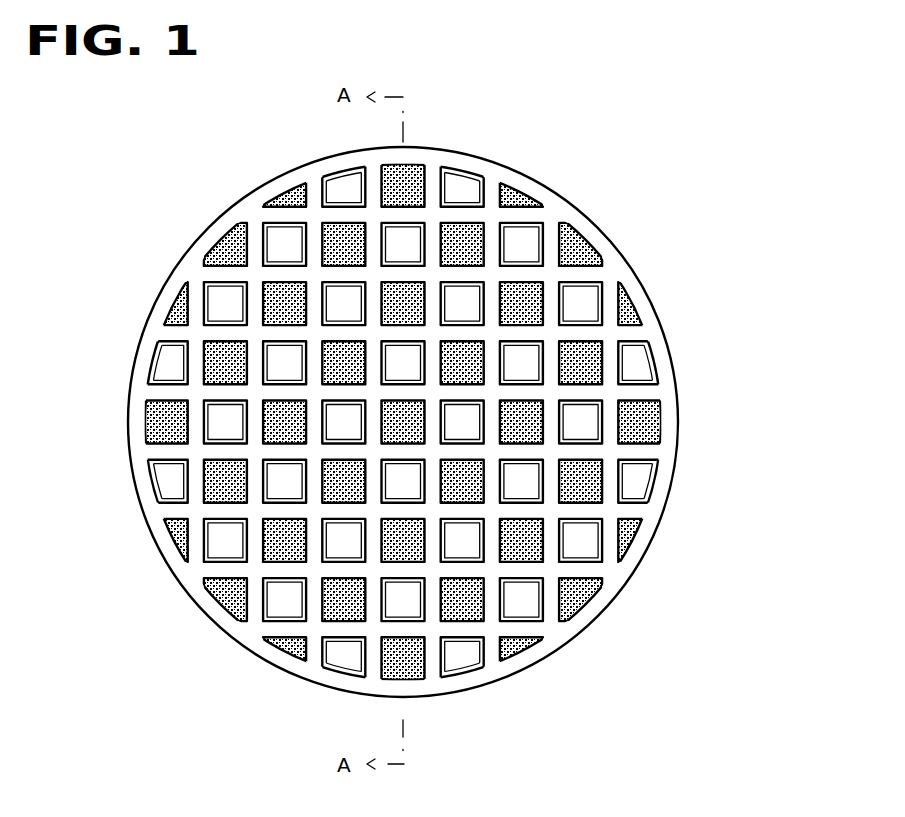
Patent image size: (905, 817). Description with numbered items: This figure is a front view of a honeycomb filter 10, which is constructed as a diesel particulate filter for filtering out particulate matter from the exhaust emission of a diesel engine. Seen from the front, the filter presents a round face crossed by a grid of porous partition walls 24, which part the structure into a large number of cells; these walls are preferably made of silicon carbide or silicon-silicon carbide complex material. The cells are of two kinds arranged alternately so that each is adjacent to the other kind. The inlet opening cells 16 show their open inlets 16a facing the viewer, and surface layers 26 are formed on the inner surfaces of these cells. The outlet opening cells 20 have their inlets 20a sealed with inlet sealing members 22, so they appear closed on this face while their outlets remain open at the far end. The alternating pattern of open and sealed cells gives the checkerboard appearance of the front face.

The honeycomb filter 10 is at (450, 376).
The inlet opening cells 16 is at (625, 311).
The open inlets 16a is at (625, 311).
The outlet opening cells 20 is at (636, 395).
The inlets 20a is at (636, 395).
The inlet sealing members 22 is at (520, 433).
The porous partition walls 24 is at (521, 335).
The surface layers 26 is at (527, 348).